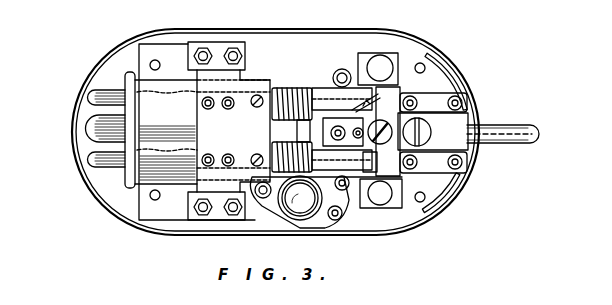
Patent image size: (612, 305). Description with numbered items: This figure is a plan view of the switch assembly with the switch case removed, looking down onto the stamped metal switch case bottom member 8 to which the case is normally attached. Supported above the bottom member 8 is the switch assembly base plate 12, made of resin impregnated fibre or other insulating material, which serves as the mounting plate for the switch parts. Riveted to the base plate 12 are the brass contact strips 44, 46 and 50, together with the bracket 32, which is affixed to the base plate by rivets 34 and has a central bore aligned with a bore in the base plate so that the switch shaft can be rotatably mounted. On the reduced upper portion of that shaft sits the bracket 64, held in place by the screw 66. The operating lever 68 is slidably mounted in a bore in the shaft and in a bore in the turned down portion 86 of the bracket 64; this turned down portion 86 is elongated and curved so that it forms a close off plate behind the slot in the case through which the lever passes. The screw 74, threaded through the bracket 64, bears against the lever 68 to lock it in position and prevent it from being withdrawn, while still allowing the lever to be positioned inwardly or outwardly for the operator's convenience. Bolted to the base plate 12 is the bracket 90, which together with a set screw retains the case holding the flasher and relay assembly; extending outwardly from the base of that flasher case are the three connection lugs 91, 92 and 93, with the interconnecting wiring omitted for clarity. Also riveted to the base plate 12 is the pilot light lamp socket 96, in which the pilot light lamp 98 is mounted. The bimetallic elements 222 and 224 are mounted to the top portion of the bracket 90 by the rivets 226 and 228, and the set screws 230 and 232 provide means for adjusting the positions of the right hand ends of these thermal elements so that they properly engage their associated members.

The switch case bottom member 8 is at (296, 32).
The switch assembly base plate 12 is at (162, 43).
The bracket 32 is at (392, 52).
The rivets 34 is at (378, 208).
The brass contact strip 44 is at (318, 100).
The brass contact strip 46 is at (462, 188).
The brass contact strip 50 is at (442, 95).
The bracket 64 is at (431, 114).
The screw 66 is at (408, 146).
The operating lever 68 is at (510, 145).
The screw 74 is at (424, 127).
The turned down portion of the bracket 86 is at (447, 73).
The bracket 90 is at (200, 120).
The connection lug 91 is at (90, 97).
The connection lug 92 is at (90, 127).
The connection lug 93 is at (90, 157).
The pilot light lamp socket 96 is at (272, 208).
The pilot light lamp 98 is at (319, 210).
The bimetallic element 222 is at (325, 90).
The bimetallic element 224 is at (355, 158).
The rivet 226 is at (229, 109).
The rivet 228 is at (200, 143).
The set screw 230 is at (253, 95).
The set screw 232 is at (256, 156).